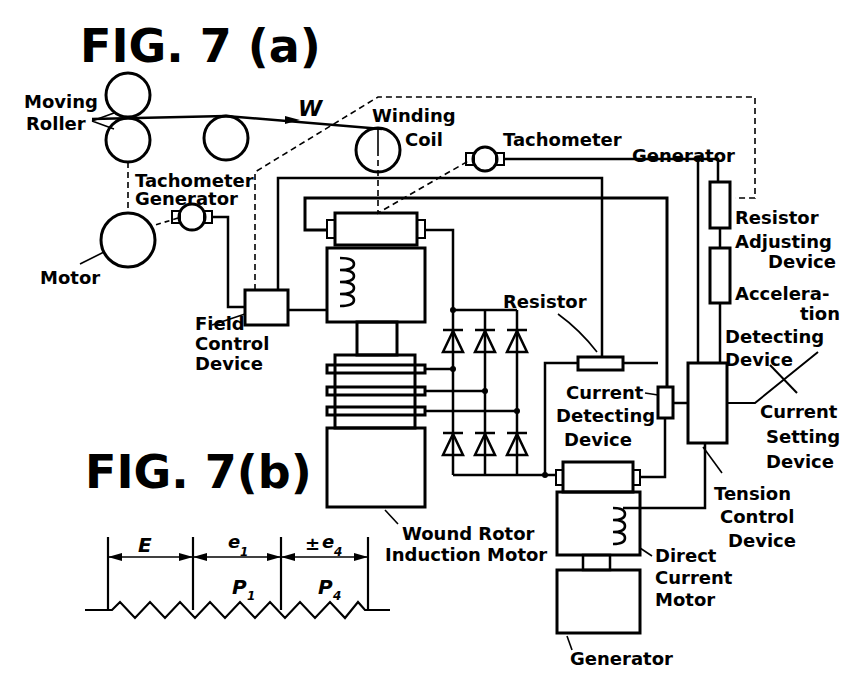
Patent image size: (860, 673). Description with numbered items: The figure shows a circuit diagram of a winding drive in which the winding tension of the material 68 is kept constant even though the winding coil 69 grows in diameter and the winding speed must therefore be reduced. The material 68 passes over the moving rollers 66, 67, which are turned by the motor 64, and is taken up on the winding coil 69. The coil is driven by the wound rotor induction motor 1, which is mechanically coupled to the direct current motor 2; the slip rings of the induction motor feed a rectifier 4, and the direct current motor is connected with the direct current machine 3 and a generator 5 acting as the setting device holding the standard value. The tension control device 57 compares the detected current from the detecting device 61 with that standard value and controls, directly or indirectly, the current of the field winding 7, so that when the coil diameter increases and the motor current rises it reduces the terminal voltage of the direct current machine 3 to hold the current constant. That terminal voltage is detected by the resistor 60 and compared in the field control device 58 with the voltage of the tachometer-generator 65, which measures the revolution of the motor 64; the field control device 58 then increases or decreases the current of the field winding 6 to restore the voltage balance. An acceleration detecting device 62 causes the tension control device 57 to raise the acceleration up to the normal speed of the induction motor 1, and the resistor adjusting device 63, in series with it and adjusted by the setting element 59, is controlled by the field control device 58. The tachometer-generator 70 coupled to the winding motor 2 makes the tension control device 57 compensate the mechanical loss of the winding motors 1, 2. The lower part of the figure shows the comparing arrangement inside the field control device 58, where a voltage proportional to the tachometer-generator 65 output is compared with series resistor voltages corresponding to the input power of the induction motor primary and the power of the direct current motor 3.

The wound rotor induction motor 1 is at (376, 467).
The direct current motor 2 is at (376, 267).
The direct current machine 3 is at (598, 508).
The rectifier 4 is at (500, 406).
The setting device 5 is at (598, 601).
The field winding 6 is at (340, 278).
The field winding 7 is at (625, 528).
The tension control device 57 is at (725, 440).
The field control device 58 is at (287, 322).
The adjusting arrow of current setting device 59 is at (788, 382).
The resistor 60 is at (600, 357).
The detecting device 61 is at (668, 420).
The acceleration detecting device 62 is at (730, 270).
The adjusting device 63 is at (730, 198).
The motor 64 is at (128, 240).
The tachometer-generator 65 is at (186, 229).
The moving roller 66 is at (150, 138).
The moving roller 67 is at (150, 94).
The material 68 is at (205, 115).
The winding coil 69 is at (394, 152).
The tachometer-generator 70 is at (489, 147).